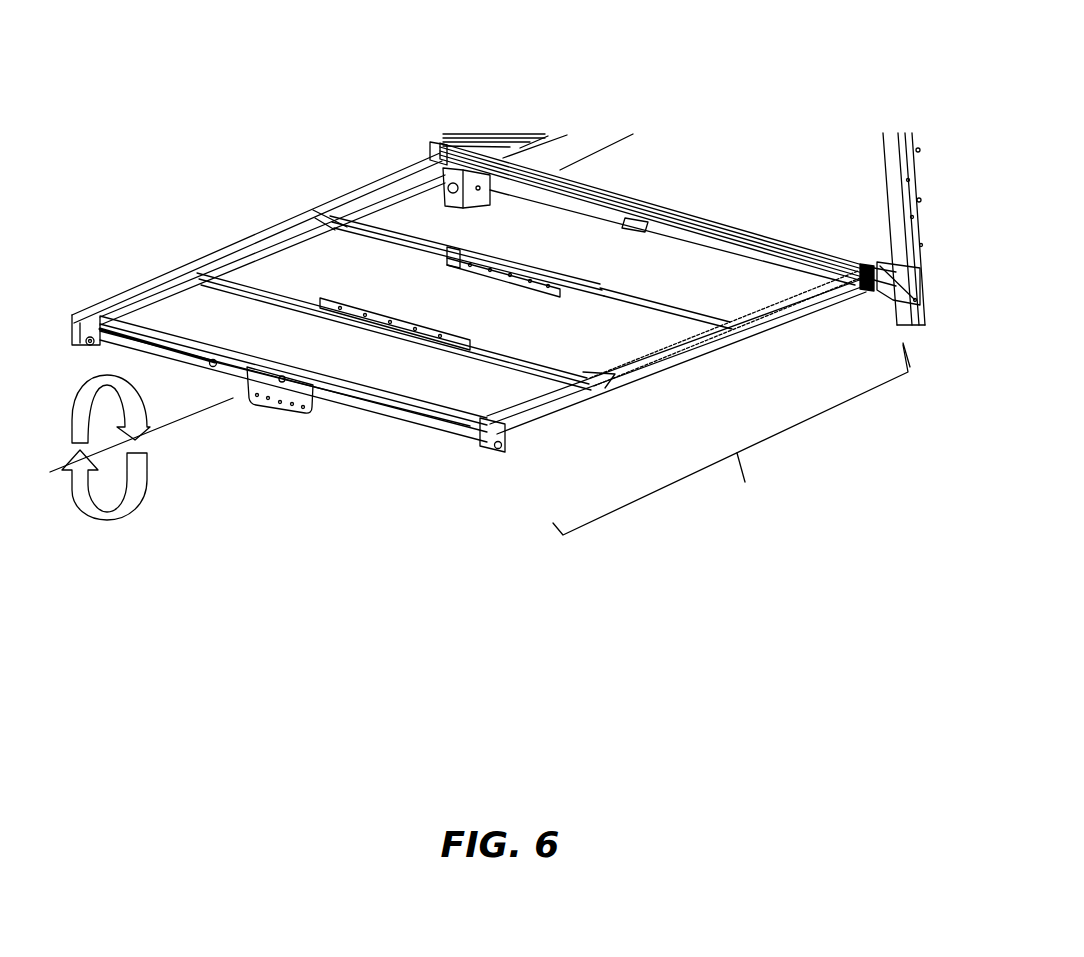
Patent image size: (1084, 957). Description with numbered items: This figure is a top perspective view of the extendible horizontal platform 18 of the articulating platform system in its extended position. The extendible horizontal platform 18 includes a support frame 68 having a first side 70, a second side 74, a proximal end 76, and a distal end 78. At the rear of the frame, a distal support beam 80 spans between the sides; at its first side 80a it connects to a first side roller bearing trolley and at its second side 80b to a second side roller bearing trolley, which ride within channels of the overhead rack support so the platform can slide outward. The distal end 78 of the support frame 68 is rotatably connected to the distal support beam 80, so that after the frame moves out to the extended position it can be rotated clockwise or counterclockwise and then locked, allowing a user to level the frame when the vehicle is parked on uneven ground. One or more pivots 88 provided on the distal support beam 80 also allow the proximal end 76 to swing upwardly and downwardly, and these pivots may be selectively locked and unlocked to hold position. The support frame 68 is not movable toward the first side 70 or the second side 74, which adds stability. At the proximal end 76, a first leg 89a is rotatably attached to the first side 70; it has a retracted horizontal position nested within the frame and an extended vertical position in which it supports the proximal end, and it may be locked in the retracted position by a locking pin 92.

The extendible horizontal platform 18 is at (198, 131).
The support frame 68 is at (660, 490).
The first side 70 is at (226, 252).
The second side 74 is at (683, 356).
The proximal end 76 is at (380, 403).
The distal end 78 is at (806, 264).
The distal support beam 80 is at (736, 228).
The first side of distal support beam 80a is at (455, 150).
The second side of distal support beam 80b is at (862, 262).
The pivot 88 is at (880, 273).
The first leg 89a is at (443, 440).
The locking pin 92 is at (86, 345).